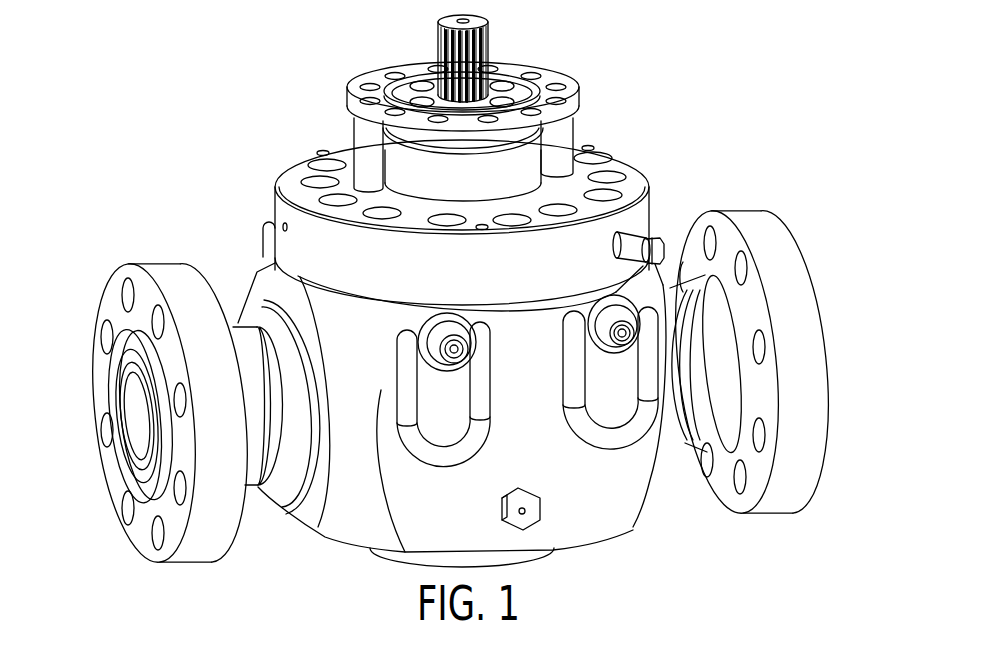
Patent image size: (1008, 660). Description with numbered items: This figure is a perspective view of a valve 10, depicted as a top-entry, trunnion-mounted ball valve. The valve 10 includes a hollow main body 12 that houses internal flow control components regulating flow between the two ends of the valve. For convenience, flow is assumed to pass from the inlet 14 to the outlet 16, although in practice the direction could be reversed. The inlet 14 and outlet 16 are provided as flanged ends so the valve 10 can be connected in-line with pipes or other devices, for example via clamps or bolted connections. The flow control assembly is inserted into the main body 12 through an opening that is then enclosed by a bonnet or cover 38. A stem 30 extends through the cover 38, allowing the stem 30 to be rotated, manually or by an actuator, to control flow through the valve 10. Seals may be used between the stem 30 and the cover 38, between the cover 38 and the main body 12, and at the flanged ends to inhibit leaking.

The valve 10 is at (326, 63).
The main body 12 is at (602, 522).
The inlet 14 is at (133, 418).
The outlet 16 is at (800, 304).
The stem 30 is at (485, 42).
The cover 38 is at (647, 216).